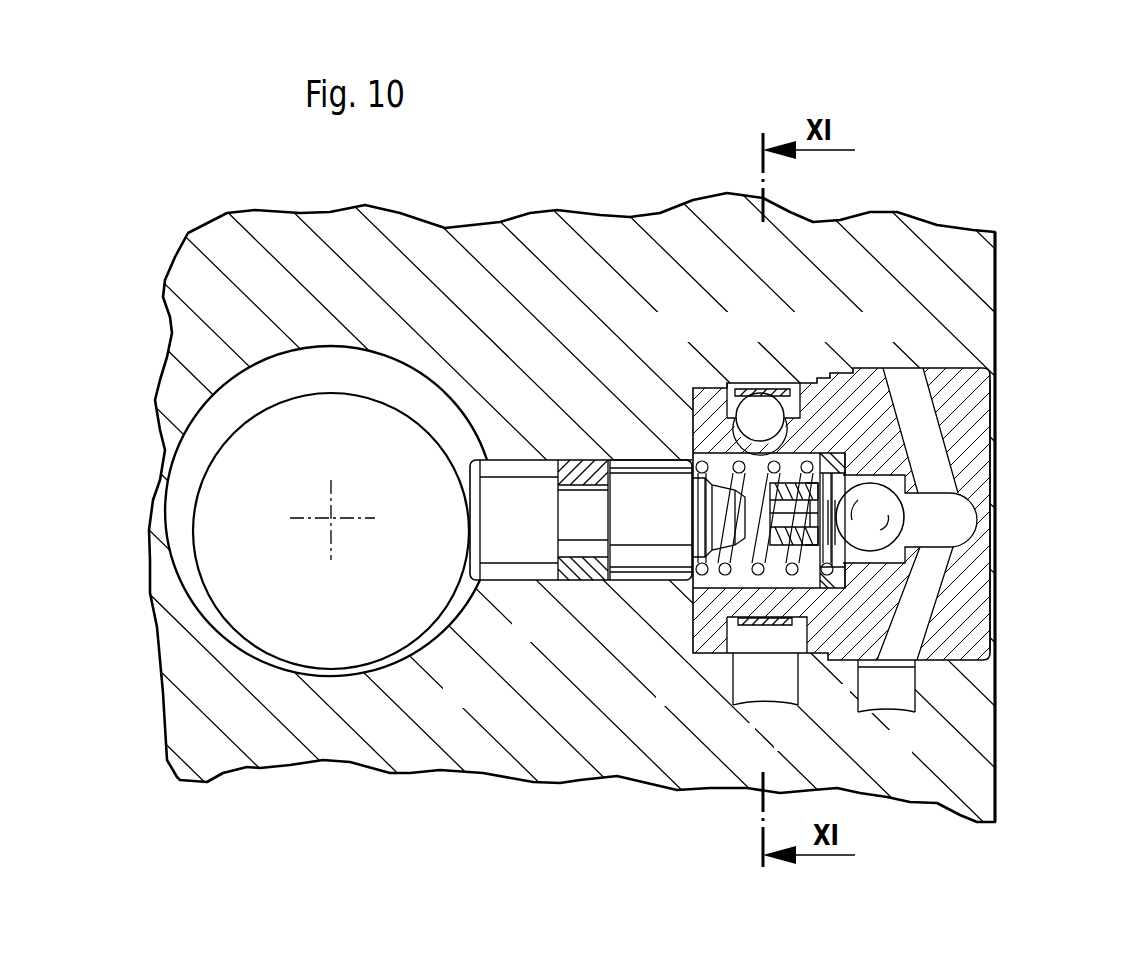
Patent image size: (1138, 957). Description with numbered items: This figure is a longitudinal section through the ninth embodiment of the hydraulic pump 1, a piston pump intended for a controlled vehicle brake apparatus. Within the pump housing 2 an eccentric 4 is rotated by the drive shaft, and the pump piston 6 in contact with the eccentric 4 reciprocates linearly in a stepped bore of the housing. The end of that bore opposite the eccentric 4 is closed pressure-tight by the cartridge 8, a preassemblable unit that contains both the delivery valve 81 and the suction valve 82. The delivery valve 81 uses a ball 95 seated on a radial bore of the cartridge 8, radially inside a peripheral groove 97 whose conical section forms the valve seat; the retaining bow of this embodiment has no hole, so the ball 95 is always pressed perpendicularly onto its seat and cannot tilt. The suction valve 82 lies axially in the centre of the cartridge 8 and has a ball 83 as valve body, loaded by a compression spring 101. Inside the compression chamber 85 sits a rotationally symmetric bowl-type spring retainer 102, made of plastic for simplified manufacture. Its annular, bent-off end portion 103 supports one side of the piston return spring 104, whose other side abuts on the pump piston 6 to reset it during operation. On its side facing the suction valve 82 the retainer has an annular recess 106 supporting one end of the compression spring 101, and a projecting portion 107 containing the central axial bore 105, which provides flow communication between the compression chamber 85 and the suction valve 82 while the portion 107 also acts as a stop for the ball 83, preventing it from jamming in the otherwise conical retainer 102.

The hydraulic pump 1 is at (568, 203).
The pump housing 2 is at (958, 286).
The eccentric 4 is at (378, 625).
The pump piston 6 is at (520, 548).
The cartridge 8 is at (1003, 470).
The delivery valve 81 is at (708, 374).
The suction valve 82 is at (990, 442).
The ball 83 is at (886, 512).
The compression chamber 85 is at (712, 500).
The ball 95 is at (748, 386).
The peripheral groove 97 is at (778, 627).
The compression spring 101 is at (838, 470).
The bowl-type spring retainer 102 is at (843, 535).
The annular, bent-off end portion 103 is at (857, 640).
The piston return spring 104 is at (702, 600).
The central axial bore 105 is at (768, 470).
The annular recess 106 is at (815, 456).
The projecting portion 107 is at (796, 390).